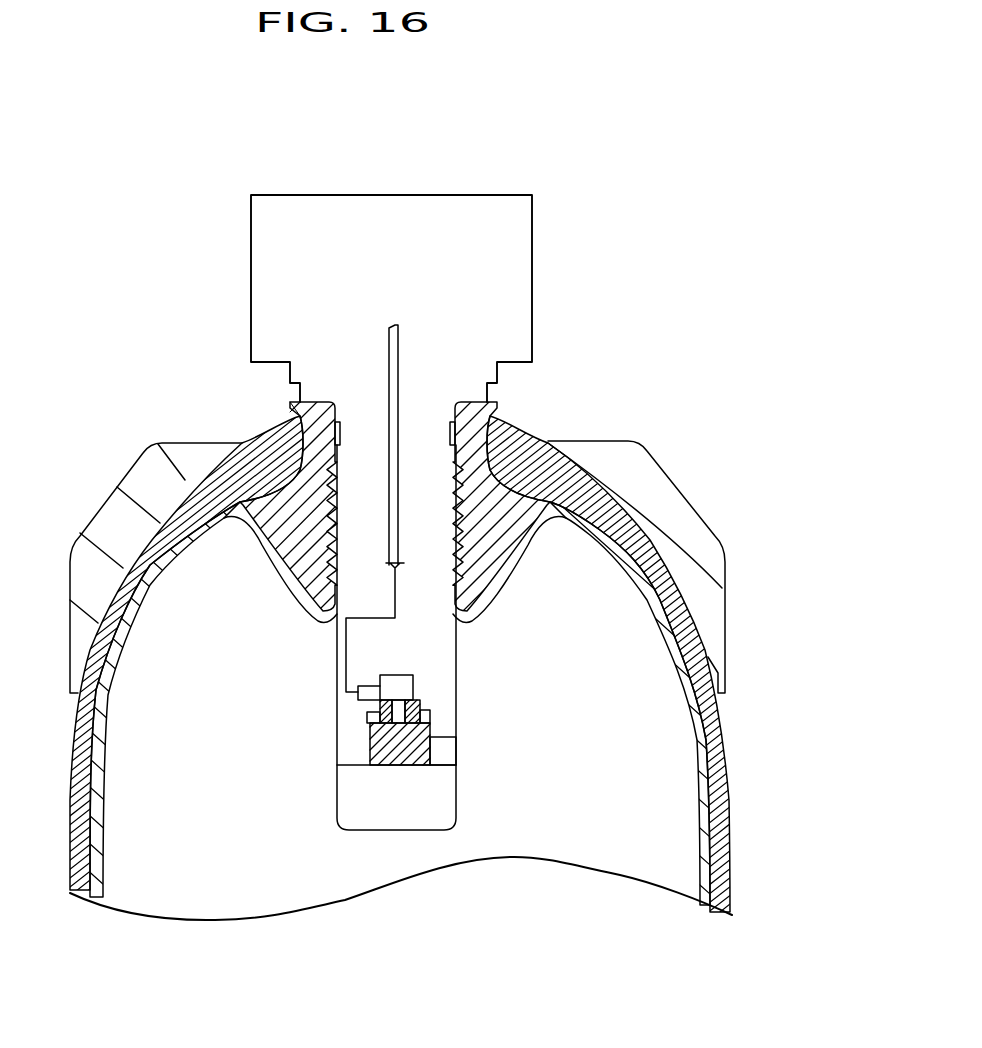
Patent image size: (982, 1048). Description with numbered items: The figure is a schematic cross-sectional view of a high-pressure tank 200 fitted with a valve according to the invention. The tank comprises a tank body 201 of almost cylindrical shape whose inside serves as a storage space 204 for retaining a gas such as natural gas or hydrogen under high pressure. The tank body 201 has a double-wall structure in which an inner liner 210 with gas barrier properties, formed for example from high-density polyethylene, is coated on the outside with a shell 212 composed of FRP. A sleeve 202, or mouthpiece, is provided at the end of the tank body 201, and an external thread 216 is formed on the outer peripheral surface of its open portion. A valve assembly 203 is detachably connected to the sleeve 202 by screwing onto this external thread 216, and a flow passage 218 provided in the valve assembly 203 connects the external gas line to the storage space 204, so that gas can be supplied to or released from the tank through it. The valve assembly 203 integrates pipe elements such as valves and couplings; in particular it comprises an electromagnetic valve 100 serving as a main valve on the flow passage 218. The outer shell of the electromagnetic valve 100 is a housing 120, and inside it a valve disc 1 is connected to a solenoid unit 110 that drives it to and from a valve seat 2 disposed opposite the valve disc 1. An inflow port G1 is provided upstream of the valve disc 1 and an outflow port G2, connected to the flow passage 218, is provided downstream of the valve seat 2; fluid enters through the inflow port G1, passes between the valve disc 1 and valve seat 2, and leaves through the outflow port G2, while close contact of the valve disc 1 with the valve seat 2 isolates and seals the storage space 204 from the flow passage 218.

The valve assembly 203 is at (492, 212).
The flow passage 218 is at (398, 337).
The high-pressure tank 200 is at (606, 430).
The sleeve 202 is at (292, 404).
The external thread 216 is at (499, 408).
The shell 212 is at (717, 745).
The inner liner 210 is at (705, 787).
The tank body 201 is at (820, 735).
The storage space 204 is at (586, 845).
The housing 120 is at (337, 722).
The solenoid unit 110 is at (442, 790).
The electromagnetic valve 100 is at (440, 707).
The valve disc 1 is at (370, 756).
The valve seat 2 is at (417, 709).
The inflow port G1 is at (448, 730).
The outflow port G2 is at (372, 690).